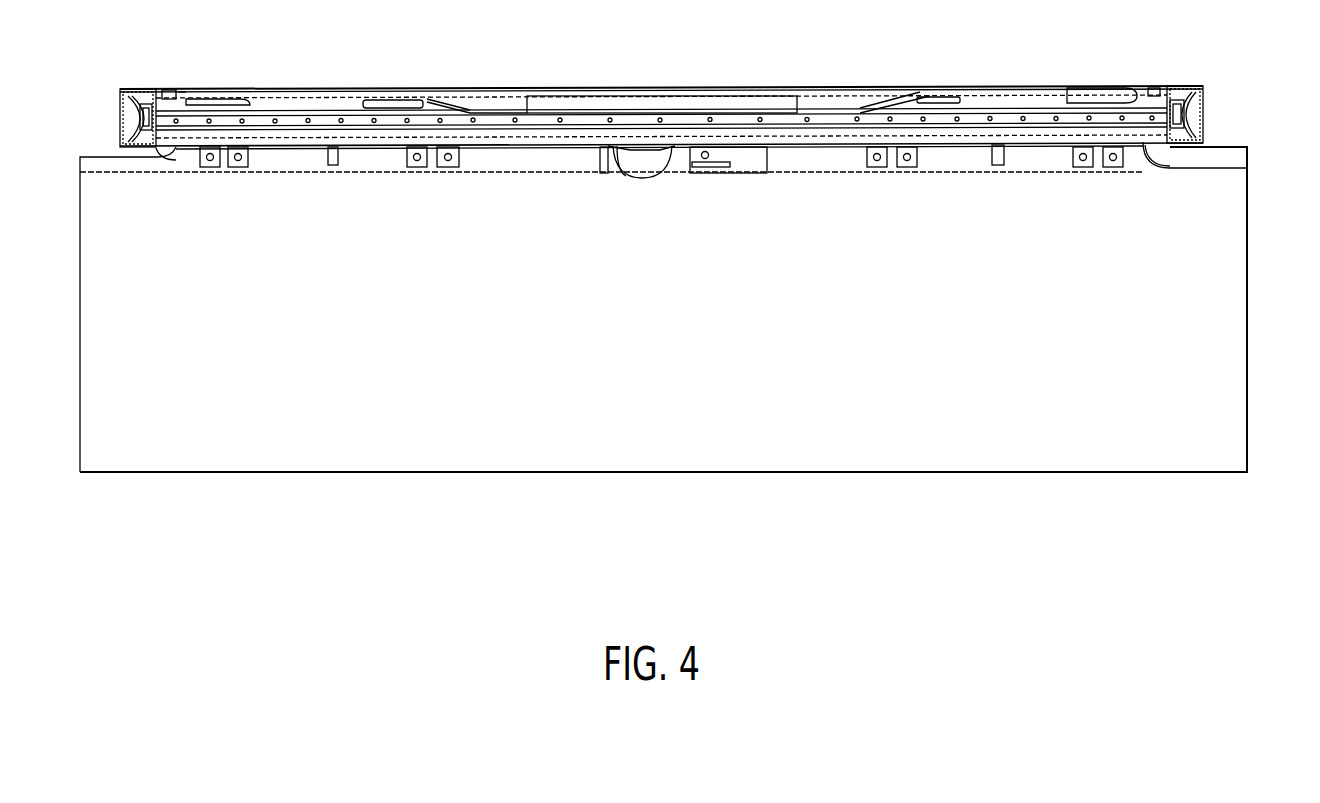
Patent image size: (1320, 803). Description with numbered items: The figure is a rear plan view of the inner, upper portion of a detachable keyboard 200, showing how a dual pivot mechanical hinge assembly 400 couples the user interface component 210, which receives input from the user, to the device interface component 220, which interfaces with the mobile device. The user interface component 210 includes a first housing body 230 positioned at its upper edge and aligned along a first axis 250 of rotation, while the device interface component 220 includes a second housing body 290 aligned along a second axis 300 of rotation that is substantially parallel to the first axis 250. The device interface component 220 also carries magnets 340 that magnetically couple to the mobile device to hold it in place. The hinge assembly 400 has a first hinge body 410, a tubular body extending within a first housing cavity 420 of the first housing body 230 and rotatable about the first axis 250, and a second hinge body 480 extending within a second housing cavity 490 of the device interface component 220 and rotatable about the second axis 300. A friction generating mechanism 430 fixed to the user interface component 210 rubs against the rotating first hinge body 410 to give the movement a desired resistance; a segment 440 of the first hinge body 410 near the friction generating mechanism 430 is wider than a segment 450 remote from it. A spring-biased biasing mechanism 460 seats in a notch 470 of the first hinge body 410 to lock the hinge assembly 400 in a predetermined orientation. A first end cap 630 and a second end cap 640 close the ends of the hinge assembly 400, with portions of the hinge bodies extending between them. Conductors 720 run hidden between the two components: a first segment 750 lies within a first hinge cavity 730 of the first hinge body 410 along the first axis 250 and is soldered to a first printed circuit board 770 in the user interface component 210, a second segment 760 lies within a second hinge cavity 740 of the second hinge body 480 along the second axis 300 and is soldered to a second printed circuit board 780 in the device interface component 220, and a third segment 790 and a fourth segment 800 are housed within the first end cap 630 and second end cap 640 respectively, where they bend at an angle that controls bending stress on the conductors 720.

The keyboard 200 is at (689, 329).
The user interface component 210 is at (1232, 392).
The device interface component 220 is at (782, 88).
The first housing body 230 is at (661, 173).
The first axis of rotation 250 is at (1238, 130).
The second housing body 290 is at (182, 78).
The second axis of rotation 300 is at (682, 88).
The magnets 340 is at (392, 108).
The dual pivot mechanical hinge assembly 400 is at (652, 88).
The first hinge body 410 is at (155, 150).
The first housing cavity 420 is at (1142, 155).
The friction generating mechanism 430 is at (237, 168).
The segment of first hinge body proximate the friction generating mechanism 440 is at (250, 153).
The segment of first hinge body remote from the friction generating mechanism 450 is at (372, 152).
The biasing mechanism 460 is at (1000, 163).
The notch 470 is at (1030, 171).
The second hinge body 480 is at (150, 98).
The second housing cavity 490 is at (358, 85).
The first end cap 630 is at (100, 101).
The second end cap 640 is at (1188, 80).
The conductors 720 is at (641, 176).
The first hinge cavity 730 is at (590, 132).
The second hinge cavity 740 is at (190, 90).
The first segment of conductors 750 is at (613, 150).
The second segment of conductors 760 is at (166, 91).
The first printed circuit board 770 is at (708, 168).
The second printed circuit board 780 is at (680, 100).
The third segment of conductors 790 is at (128, 112).
The fourth segment of conductors 800 is at (1183, 100).